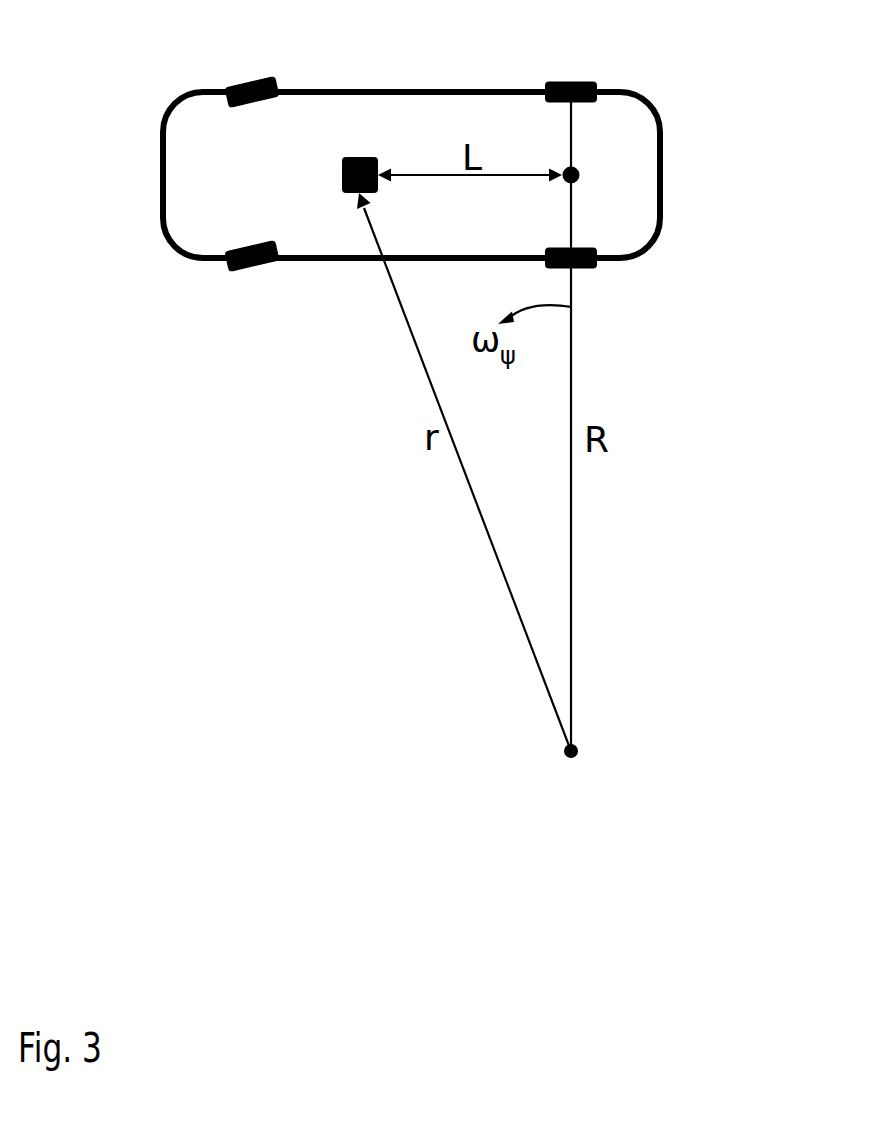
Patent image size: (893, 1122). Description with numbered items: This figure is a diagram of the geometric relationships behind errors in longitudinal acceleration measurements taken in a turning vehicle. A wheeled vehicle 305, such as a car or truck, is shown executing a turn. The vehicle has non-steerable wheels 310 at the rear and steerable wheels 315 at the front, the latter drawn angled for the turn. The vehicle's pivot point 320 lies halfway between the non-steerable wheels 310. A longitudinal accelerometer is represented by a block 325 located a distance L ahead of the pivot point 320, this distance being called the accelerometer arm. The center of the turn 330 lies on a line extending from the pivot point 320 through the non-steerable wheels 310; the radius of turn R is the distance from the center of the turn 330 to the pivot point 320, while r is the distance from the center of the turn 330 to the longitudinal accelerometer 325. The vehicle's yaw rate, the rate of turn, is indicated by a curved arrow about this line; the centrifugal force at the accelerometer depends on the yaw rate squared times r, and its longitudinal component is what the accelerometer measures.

The wheeled vehicle 305 is at (665, 223).
The non-steerable wheels 310 is at (592, 270).
The steerable wheels 315 is at (227, 275).
The pivot point 320 is at (583, 170).
The longitudinal accelerometer 325 is at (338, 175).
The center of the turn 330 is at (580, 745).